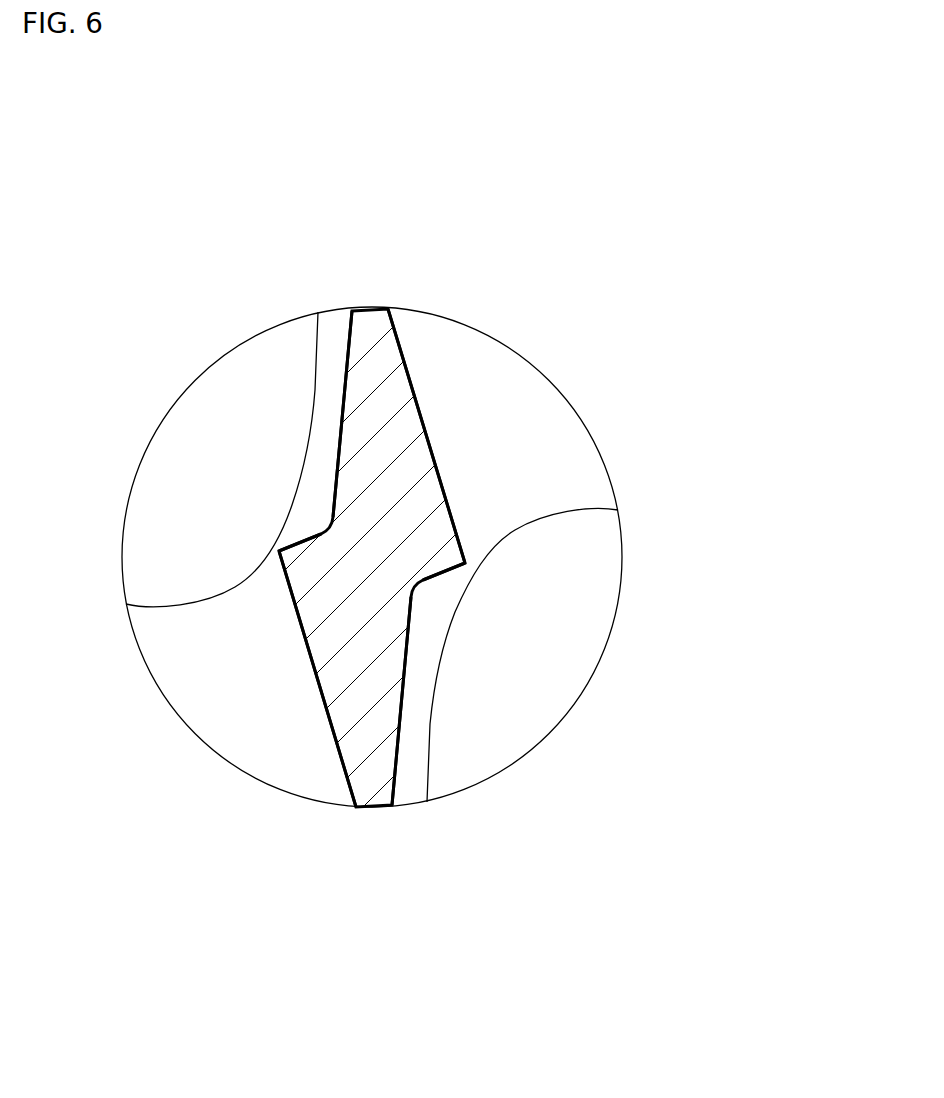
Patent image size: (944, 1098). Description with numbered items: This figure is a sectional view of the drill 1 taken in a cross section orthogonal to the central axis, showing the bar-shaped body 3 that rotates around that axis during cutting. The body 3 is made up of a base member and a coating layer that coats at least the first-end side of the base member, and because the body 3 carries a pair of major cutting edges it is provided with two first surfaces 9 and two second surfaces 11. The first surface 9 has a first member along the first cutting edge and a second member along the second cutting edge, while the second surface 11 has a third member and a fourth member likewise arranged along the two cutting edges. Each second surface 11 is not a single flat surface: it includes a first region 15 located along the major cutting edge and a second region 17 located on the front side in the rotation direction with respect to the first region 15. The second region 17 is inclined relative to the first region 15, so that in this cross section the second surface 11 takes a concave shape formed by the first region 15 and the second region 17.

The drill 1 is at (470, 285).
The body 3 is at (336, 738).
The first surface 9 is at (433, 455).
The second surface 11 is at (372, 557).
The first region 15 is at (341, 427).
The second region 17 is at (280, 552).